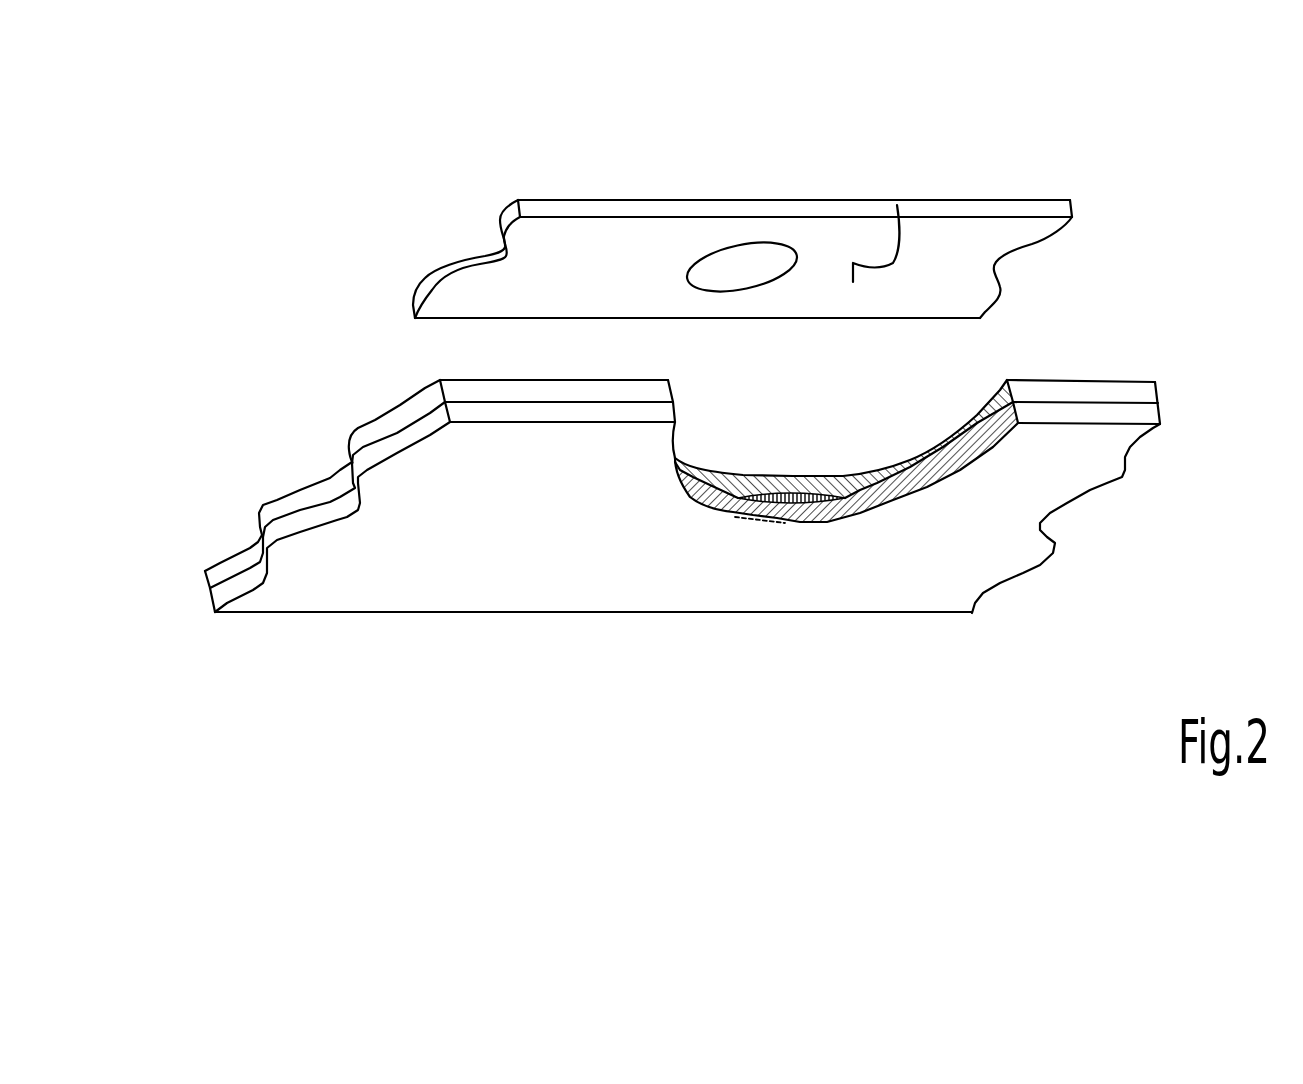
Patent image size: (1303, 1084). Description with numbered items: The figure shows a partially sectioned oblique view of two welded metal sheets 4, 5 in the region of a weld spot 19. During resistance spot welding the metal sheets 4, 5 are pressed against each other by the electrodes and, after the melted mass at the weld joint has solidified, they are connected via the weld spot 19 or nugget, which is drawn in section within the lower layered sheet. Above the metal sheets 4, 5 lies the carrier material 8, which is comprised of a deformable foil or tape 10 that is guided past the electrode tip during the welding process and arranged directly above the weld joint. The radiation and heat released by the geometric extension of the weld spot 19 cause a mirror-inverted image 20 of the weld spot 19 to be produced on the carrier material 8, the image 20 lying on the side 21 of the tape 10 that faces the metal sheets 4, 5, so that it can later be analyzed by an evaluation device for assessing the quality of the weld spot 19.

The carrier material 8 is at (1116, 193).
The tape 10 is at (938, 248).
The mirror-inverted image 20 is at (747, 265).
The side 21 is at (897, 205).
The metal sheet 4 is at (1095, 390).
The metal sheet 5 is at (533, 550).
The weld spot 19 is at (790, 518).